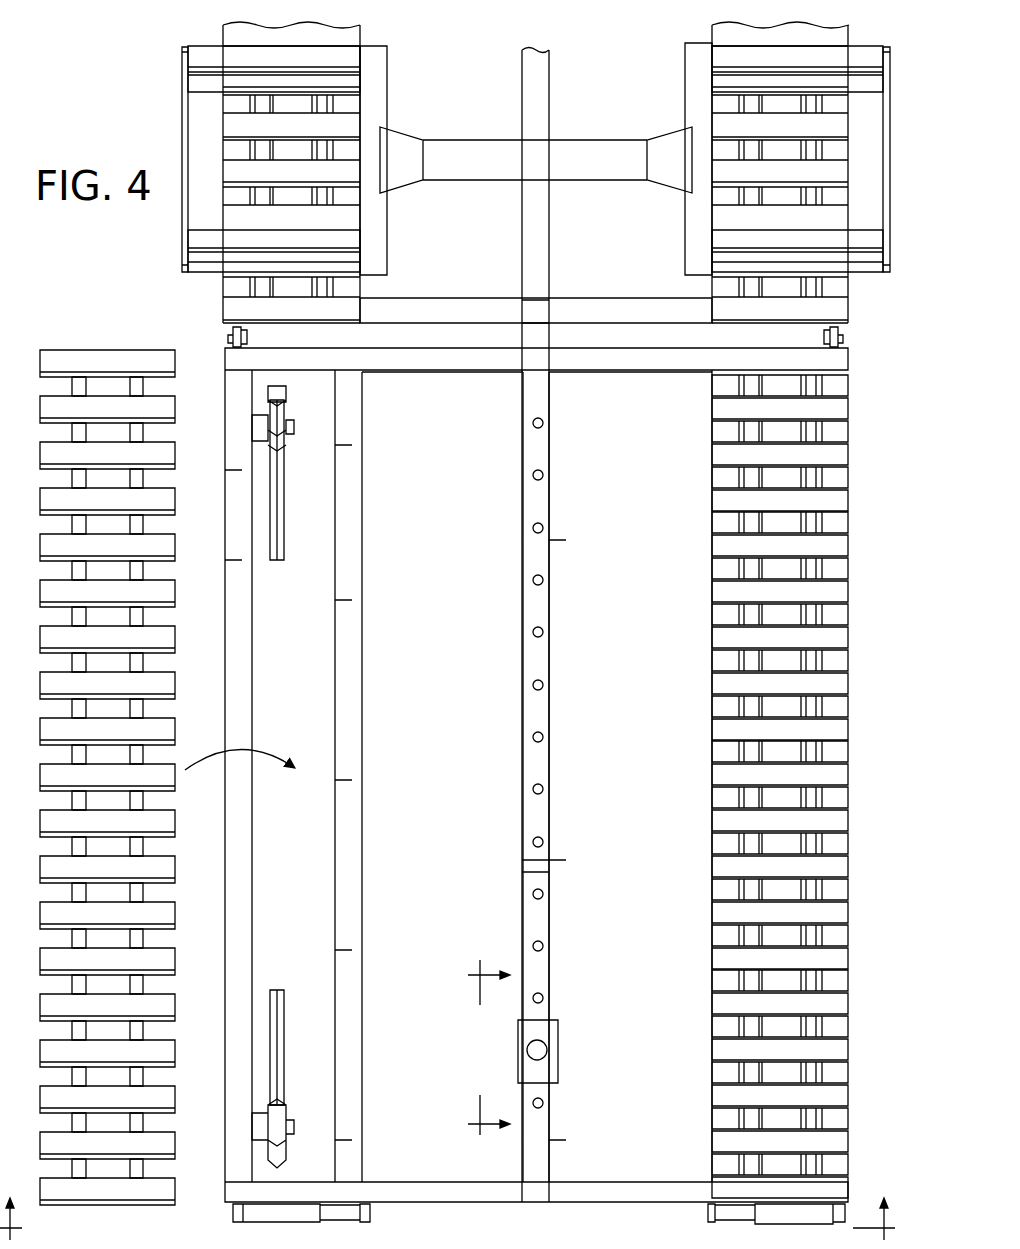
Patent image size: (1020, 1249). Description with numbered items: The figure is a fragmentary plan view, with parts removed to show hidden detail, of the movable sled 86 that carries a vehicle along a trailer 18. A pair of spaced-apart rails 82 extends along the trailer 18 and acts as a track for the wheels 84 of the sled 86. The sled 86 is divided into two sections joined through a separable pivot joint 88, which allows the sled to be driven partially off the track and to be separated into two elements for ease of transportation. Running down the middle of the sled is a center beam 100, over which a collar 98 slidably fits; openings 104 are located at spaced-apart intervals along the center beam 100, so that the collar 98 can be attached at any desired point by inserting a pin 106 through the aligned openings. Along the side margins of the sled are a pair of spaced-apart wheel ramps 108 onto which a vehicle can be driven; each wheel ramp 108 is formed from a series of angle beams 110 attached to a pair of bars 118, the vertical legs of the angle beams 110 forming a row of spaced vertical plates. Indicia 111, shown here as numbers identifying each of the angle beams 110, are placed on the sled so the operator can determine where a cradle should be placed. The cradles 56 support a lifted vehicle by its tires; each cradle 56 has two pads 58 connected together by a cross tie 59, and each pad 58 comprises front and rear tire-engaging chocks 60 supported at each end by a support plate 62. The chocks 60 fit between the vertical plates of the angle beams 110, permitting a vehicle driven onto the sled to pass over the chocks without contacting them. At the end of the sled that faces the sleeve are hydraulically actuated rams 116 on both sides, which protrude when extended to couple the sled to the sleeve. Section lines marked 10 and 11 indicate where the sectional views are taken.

The section line 10- 10 is at (487, 1049).
The section line 11- 11 is at (455, 1223).
The trailer 18 is at (128, 386).
The cradle 56 is at (395, 68).
The pad 58 is at (200, 58).
The cross tie 59 is at (593, 157).
The tire-engaging chock 60 is at (205, 68).
The support plate 62 is at (185, 192).
The rail 82 is at (283, 513).
The wheel 84 is at (285, 414).
The sled 86 is at (890, 650).
The separable pivot joint 88 is at (233, 338).
The collar 98 is at (560, 1040).
The center beam 100 is at (540, 778).
The opening 104 is at (542, 530).
The pin 106 is at (547, 1052).
The wheel ramp 108 is at (367, 97).
The angle beam 110 is at (235, 146).
The indicia 111 is at (853, 870).
The hydraulically actuated ram 116 is at (345, 1217).
The bar 118 is at (320, 147).